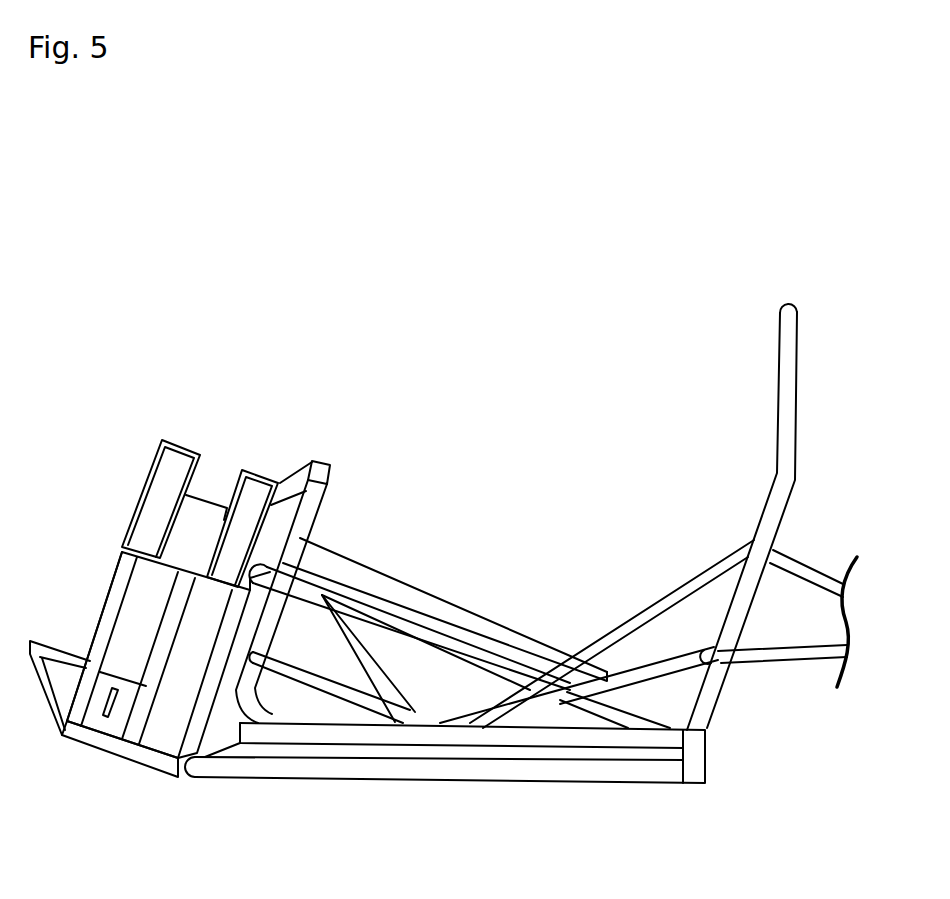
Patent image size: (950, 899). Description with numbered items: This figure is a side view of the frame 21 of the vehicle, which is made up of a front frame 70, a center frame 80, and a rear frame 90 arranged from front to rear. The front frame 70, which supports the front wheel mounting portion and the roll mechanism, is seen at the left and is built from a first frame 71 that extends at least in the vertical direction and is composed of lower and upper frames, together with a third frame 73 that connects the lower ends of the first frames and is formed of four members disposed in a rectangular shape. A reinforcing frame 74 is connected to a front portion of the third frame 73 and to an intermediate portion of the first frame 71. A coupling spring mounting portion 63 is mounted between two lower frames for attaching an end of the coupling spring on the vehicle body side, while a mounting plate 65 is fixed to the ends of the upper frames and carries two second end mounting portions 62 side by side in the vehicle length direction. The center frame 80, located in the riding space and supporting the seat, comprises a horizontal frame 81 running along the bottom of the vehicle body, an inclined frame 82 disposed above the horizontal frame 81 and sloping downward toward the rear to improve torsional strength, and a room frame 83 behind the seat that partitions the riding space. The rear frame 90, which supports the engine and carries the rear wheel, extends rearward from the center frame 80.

The frame 21 is at (100, 292).
The second end mounting portion 62 is at (172, 438).
The coupling spring mounting portion 63 is at (107, 720).
The mounting plate 65 is at (172, 560).
The front frame 70 is at (242, 356).
The first frame 71 is at (102, 632).
The third frame 73 is at (151, 768).
The reinforcing frame 74 is at (42, 708).
The center frame 80 is at (567, 356).
The horizontal frame 81 is at (362, 736).
The inclined frame 82 is at (383, 640).
The room frame 83 is at (786, 312).
The rear frame 90 is at (822, 508).